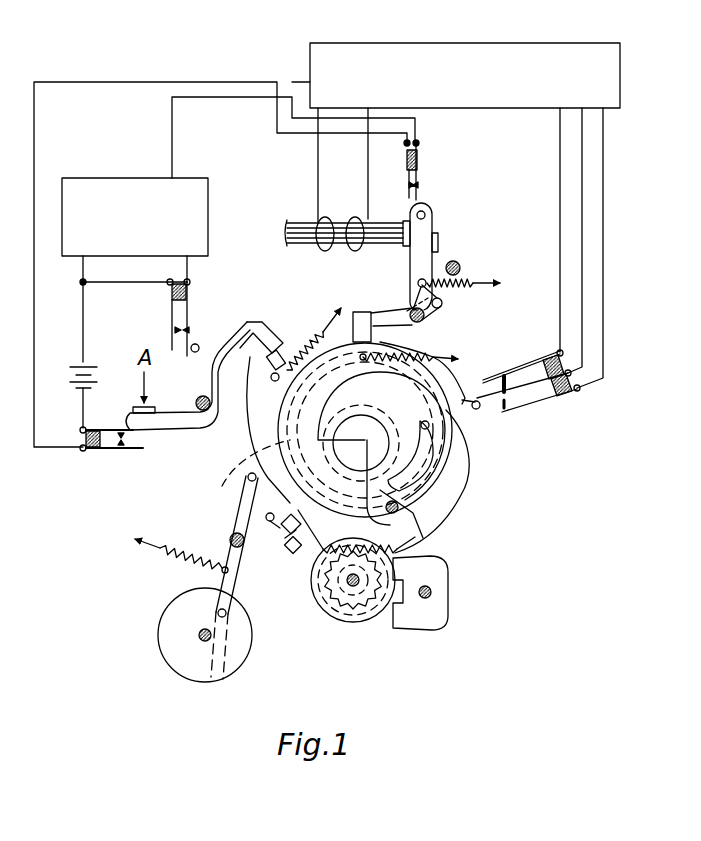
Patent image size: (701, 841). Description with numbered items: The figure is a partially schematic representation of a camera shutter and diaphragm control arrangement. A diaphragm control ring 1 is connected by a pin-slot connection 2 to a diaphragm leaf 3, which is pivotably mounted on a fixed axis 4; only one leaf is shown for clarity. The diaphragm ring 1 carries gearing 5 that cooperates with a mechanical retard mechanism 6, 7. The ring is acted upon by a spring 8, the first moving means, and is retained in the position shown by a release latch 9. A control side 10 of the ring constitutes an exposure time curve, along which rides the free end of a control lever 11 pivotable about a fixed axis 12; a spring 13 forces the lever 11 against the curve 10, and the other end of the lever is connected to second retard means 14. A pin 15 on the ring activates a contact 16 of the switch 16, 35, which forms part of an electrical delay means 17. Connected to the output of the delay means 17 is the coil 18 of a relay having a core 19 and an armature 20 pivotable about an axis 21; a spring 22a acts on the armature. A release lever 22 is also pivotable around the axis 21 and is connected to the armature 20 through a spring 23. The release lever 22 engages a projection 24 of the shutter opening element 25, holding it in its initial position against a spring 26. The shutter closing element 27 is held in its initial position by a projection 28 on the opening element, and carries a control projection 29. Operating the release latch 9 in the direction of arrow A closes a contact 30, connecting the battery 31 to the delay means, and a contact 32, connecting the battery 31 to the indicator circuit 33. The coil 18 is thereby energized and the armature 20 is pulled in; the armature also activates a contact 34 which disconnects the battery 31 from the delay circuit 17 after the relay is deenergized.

The diaphragm control ring 1 is at (433, 505).
The pin-slot connection 2 is at (430, 427).
The diaphragm leaf 3 is at (430, 470).
The fixed axis 4 is at (423, 538).
The gearing 5 is at (467, 487).
The mechanical retard mechanism 6 is at (368, 619).
The mechanical retard mechanism 7 is at (448, 607).
The spring 8 is at (300, 343).
The release latch 9 is at (180, 424).
The control side 10 is at (247, 425).
The control lever 11 is at (237, 523).
The fixed axis 12 is at (237, 560).
The spring 13 is at (202, 565).
The second retard means 14 is at (234, 657).
The pin 15 is at (478, 409).
The contact 16 is at (508, 380).
The electrical delay means 17 is at (376, 49).
The coil 18 is at (327, 257).
The core 19 is at (290, 224).
The armature 20 is at (415, 260).
The axis 21 is at (421, 324).
The release lever 22 is at (390, 314).
The spring 22a is at (478, 280).
The spring 23 is at (444, 304).
The projection 24 is at (353, 314).
The shutter opening element 25 is at (237, 470).
The spring 26 is at (424, 366).
The shutter closing element 27 is at (282, 413).
The projection 28 is at (283, 532).
The control projection 29 is at (297, 548).
The contact 30 is at (112, 440).
The battery 31 is at (58, 383).
The contact 32 is at (181, 322).
The indicator circuit 33 is at (125, 178).
The contact 34 is at (416, 184).
The switch contact 35 is at (522, 402).